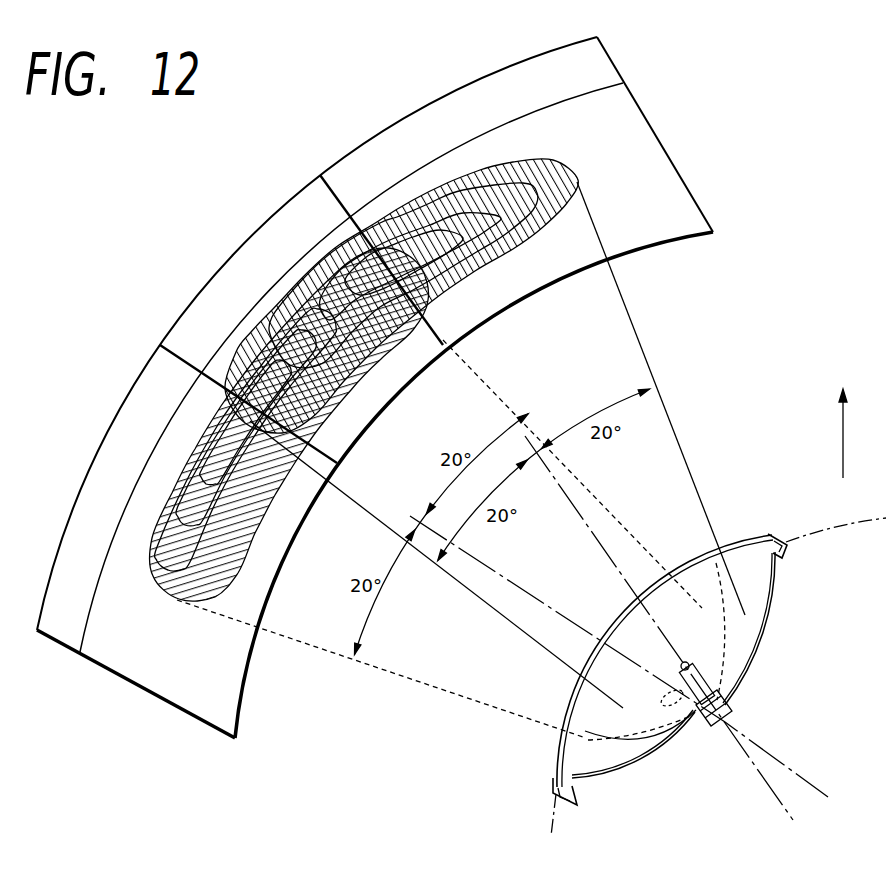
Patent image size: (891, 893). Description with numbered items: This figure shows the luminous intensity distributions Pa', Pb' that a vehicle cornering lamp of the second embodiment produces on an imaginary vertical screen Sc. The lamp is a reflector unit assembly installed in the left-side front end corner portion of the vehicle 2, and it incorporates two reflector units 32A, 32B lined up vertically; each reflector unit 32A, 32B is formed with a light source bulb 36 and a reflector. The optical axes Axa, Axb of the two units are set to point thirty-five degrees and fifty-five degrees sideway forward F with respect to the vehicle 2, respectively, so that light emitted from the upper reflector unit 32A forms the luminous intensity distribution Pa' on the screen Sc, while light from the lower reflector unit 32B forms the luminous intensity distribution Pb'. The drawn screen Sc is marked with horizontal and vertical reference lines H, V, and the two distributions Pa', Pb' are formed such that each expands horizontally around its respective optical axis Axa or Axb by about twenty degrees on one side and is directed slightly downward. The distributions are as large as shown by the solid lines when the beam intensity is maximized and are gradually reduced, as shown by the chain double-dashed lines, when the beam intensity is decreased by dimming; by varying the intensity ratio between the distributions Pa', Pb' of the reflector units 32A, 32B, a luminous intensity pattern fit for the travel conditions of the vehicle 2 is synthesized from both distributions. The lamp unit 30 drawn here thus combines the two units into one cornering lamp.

The vehicle 2 is at (810, 516).
The lamp unit 30 is at (518, 742).
The reflector unit 32A is at (757, 640).
The reflector unit 32B is at (655, 765).
The light source bulb 36 is at (690, 668).
The imaginary vertical screen Sc is at (657, 201).
The luminous intensity distribution Pa is at (334, 240).
The luminous intensity distribution Pb is at (182, 438).
The optical axis Axa is at (566, 500).
The optical axis Axb is at (496, 574).
The horizontal line H is at (358, 372).
The vertical line V is at (297, 317).
The forward direction F is at (842, 420).